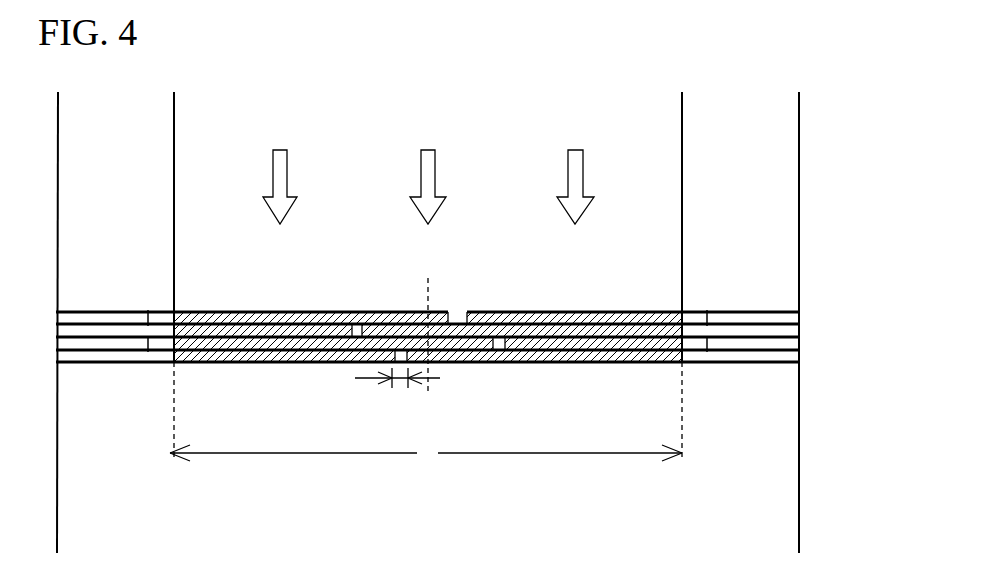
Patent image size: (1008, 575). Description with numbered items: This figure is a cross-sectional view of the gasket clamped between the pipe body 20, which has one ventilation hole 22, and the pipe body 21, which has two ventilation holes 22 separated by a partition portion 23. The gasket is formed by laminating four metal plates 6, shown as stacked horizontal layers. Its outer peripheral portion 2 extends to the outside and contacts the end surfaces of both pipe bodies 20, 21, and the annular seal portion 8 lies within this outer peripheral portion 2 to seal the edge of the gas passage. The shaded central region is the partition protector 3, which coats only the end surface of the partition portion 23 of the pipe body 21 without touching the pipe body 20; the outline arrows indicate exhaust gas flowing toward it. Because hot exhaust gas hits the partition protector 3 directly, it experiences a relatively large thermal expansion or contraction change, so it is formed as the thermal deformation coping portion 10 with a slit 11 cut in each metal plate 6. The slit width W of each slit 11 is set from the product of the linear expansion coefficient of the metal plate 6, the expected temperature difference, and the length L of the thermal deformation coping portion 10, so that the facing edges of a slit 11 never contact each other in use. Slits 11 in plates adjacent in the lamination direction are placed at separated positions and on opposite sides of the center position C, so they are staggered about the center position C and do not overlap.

The outer peripheral portion 2 is at (442, 328).
The partition protector 3 is at (313, 311).
The metal plate 6 is at (557, 312).
The seal portion 8 is at (162, 310).
The thermal deformation coping portion 10 is at (490, 311).
The slit 11 is at (352, 324).
The pipe body 20 is at (801, 221).
The pipe body 21 is at (801, 423).
The ventilation hole 22 is at (682, 292).
The partition portion 23 is at (265, 355).
The center position C is at (428, 319).
The slit width W is at (397, 386).
The length L is at (426, 416).